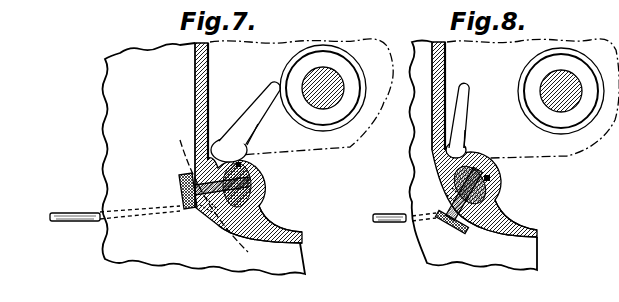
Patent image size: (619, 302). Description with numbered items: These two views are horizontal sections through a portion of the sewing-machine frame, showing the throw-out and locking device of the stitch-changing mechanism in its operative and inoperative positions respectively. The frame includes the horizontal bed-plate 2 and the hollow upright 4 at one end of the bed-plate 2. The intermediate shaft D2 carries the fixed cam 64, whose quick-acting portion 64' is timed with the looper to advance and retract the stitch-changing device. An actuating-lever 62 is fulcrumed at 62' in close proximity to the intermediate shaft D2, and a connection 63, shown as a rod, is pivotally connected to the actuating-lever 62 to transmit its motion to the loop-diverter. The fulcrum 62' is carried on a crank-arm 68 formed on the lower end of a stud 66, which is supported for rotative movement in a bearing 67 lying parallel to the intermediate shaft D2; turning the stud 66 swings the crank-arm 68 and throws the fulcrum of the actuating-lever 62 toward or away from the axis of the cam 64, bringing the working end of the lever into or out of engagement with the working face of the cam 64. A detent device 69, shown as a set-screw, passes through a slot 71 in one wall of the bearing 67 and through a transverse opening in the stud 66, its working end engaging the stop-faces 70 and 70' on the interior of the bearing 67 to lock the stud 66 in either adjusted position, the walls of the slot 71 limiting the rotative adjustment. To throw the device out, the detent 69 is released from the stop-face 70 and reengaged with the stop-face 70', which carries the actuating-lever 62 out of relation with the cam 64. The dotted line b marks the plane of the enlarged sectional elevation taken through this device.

In FIG. 7, the bed-plate 2 is at (108, 63).
In FIG. 8, the bed-plate 2 is at (490, 259).
In FIG. 7, the hollow upright 4 is at (195, 67).
In FIG. 8, the hollow upright 4 is at (432, 118).
In FIG. 7, the actuating-lever 62 is at (249, 112).
In FIG. 8, the actuating-lever 62 is at (476, 115).
In FIG. 7, the fulcrum of the actuating-lever 62' is at (228, 133).
In FIG. 8, the fulcrum of the actuating-lever 62' is at (419, 155).
In FIG. 7, the connection 63 is at (67, 212).
In FIG. 8, the connection 63 is at (393, 221).
In FIG. 7, the cam 64 is at (323, 75).
In FIG. 8, the cam 64 is at (561, 76).
In FIG. 7, the quick-acting portion of the cam 64' is at (301, 88).
In FIG. 8, the quick-acting portion of the cam 64' is at (546, 91).
In FIG. 7, the intermediate shaft D2 is at (325, 75).
In FIG. 8, the intermediate shaft D2 is at (574, 98).
In FIG. 7, the stud 66 is at (257, 197).
In FIG. 8, the stud 66 is at (493, 197).
In FIG. 7, the bearing 67 is at (252, 206).
In FIG. 8, the bearing 67 is at (503, 190).
In FIG. 7, the crank-arm 68 is at (248, 146).
In FIG. 8, the crank-arm 68 is at (463, 147).
In FIG. 7, the detent device 69 is at (182, 190).
In FIG. 8, the detent device 69 is at (452, 230).
In FIG. 7, the stop-face 70 is at (243, 182).
In FIG. 8, the stop-face 70 is at (490, 194).
In FIG. 7, the stop-face 70' is at (254, 171).
In FIG. 8, the stop-face 70' is at (493, 181).
In FIG. 7, the slot 71 is at (215, 205).
In FIG. 8, the slot 71 is at (450, 188).
In FIG. 7, the section line b b is at (213, 196).